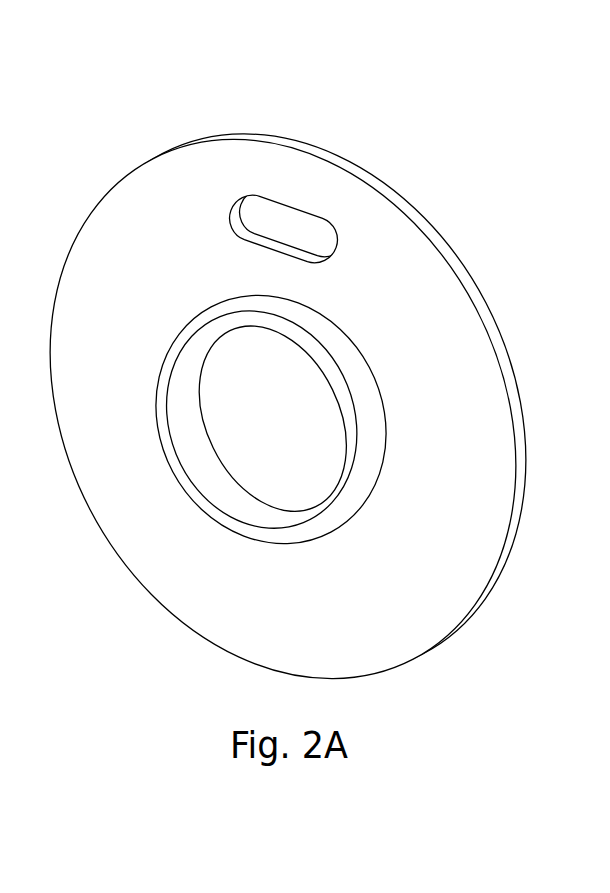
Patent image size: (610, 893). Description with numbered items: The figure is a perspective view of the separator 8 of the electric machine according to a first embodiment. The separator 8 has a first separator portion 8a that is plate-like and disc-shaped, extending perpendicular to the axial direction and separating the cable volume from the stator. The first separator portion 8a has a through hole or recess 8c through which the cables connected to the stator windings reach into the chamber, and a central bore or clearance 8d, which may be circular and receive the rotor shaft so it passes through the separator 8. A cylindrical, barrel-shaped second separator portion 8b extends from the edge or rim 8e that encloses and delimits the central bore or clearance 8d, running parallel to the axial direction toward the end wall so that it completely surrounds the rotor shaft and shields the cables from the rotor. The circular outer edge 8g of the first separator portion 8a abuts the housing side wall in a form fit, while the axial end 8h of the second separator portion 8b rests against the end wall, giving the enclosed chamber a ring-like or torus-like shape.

The separator 8 is at (450, 120).
The first separator portion 8a is at (440, 298).
The second separator portion 8b is at (295, 542).
The through hole or recess 8c is at (292, 238).
The central bore or clearance 8d is at (257, 446).
The edge or rim 8e is at (385, 408).
The outer edge 8g is at (140, 168).
The axial end 8h is at (252, 530).